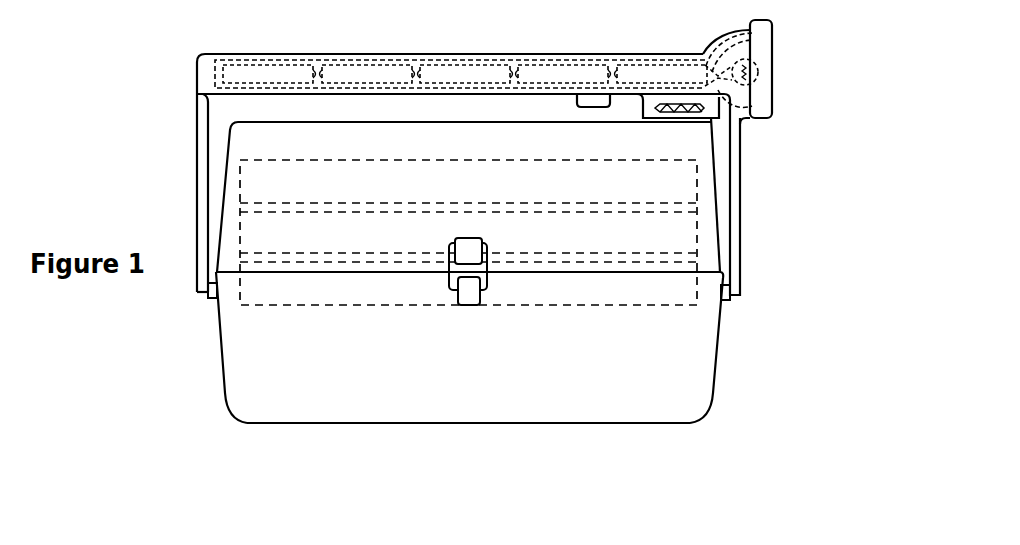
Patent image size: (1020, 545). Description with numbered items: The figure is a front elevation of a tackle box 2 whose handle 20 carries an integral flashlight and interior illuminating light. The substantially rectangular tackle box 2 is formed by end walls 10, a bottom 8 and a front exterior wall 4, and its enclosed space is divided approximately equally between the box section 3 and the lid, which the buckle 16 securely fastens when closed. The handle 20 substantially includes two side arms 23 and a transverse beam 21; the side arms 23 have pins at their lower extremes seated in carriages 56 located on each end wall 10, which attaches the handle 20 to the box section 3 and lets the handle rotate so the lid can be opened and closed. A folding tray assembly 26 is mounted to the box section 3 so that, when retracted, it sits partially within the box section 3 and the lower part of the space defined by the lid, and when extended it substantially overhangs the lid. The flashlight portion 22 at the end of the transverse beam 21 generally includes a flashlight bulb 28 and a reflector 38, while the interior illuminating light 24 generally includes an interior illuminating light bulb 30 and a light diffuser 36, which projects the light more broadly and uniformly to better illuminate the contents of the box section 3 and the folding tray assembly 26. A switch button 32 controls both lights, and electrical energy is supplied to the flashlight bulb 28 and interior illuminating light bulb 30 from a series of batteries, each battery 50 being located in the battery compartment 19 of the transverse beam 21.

The tackle box 2 is at (165, 55).
The box section 3 is at (708, 438).
The front exterior wall 4 is at (540, 405).
The bottom 8 is at (387, 425).
The end wall 10 is at (226, 395).
The buckle 16 is at (462, 305).
The battery compartment 19 is at (402, 60).
The handle 20 is at (182, 170).
The transverse beam 21 is at (197, 82).
The flashlight portion 22 is at (785, 27).
The side arm 23 is at (203, 126).
The interior illuminating light 24 is at (722, 131).
The folding tray assembly 26 is at (228, 334).
The flashlight bulb 28 is at (720, 75).
The interior illuminating light bulb 30 is at (683, 113).
The switch button 32 is at (597, 108).
The light diffuser 36 is at (660, 119).
The reflector 38 is at (722, 68).
The battery 50 is at (260, 70).
The carriage 56 is at (210, 300).